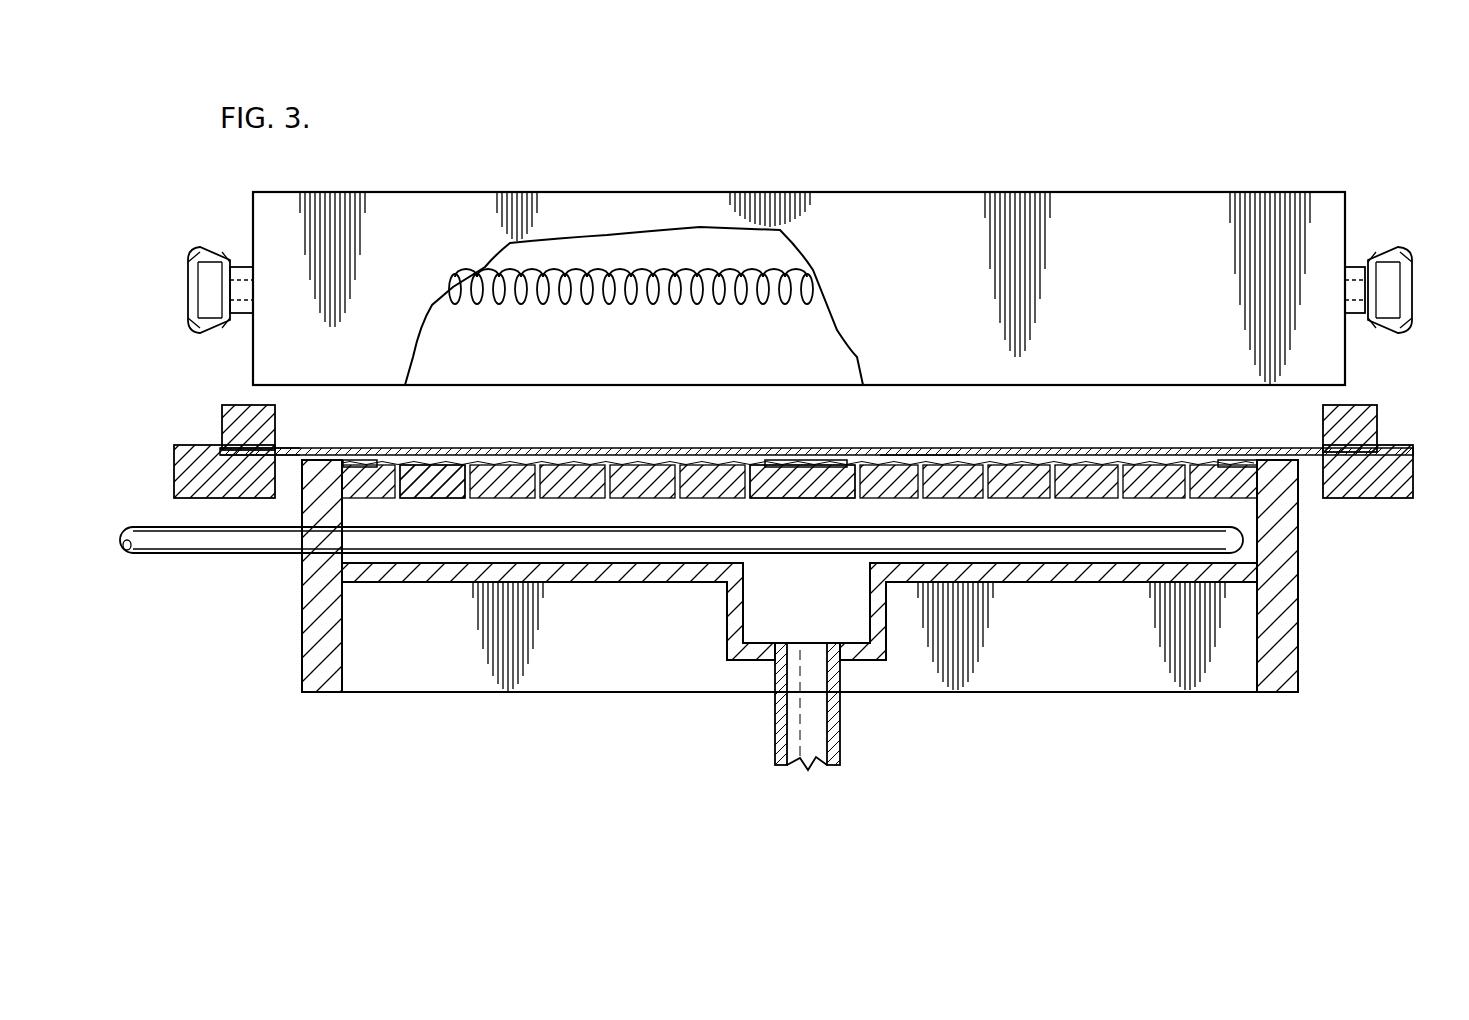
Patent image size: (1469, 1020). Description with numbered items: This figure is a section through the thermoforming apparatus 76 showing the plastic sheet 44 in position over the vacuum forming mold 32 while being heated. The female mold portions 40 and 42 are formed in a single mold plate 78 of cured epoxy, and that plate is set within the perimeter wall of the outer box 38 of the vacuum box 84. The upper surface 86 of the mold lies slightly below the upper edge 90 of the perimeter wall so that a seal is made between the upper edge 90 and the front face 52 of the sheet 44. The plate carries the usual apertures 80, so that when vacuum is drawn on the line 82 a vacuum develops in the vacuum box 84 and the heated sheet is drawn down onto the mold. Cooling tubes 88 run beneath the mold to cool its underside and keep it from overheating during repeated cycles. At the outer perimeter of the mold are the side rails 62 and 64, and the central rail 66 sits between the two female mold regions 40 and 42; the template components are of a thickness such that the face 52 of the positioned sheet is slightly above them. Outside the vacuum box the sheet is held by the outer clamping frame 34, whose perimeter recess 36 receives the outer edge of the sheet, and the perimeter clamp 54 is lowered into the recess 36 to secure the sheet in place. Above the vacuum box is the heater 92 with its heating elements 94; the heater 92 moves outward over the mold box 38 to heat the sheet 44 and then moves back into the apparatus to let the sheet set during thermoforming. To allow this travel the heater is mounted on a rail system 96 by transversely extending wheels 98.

The female vacuum forming mold 32 is at (286, 561).
The outer clamping frame 34 is at (188, 472).
The perimeter recess 36 is at (220, 452).
The outer box 38 is at (1290, 598).
The female mold region 40 is at (550, 487).
The female mold region 42 is at (1018, 492).
The plastic sheet 44 is at (1041, 448).
The front face of the sheet 52 is at (433, 457).
The perimeter clamp 54 is at (243, 412).
The side rail 62 is at (352, 467).
The side rail 64 is at (1233, 458).
The central rail 66 is at (810, 463).
The thermoforming apparatus 76 is at (186, 302).
The mold plate 78 is at (837, 478).
The apertures 80 is at (452, 487).
The vacuum line 82 is at (795, 712).
The vacuum box 84 is at (788, 562).
The upper surface of the mold 86 is at (913, 462).
The cooling tubes 88 is at (168, 533).
The upper edge of perimeter wall 90 is at (320, 458).
The heater 92 is at (1078, 225).
The heating elements 94 is at (637, 272).
The rail system 96 is at (1410, 258).
The wheels 98 is at (1353, 265).